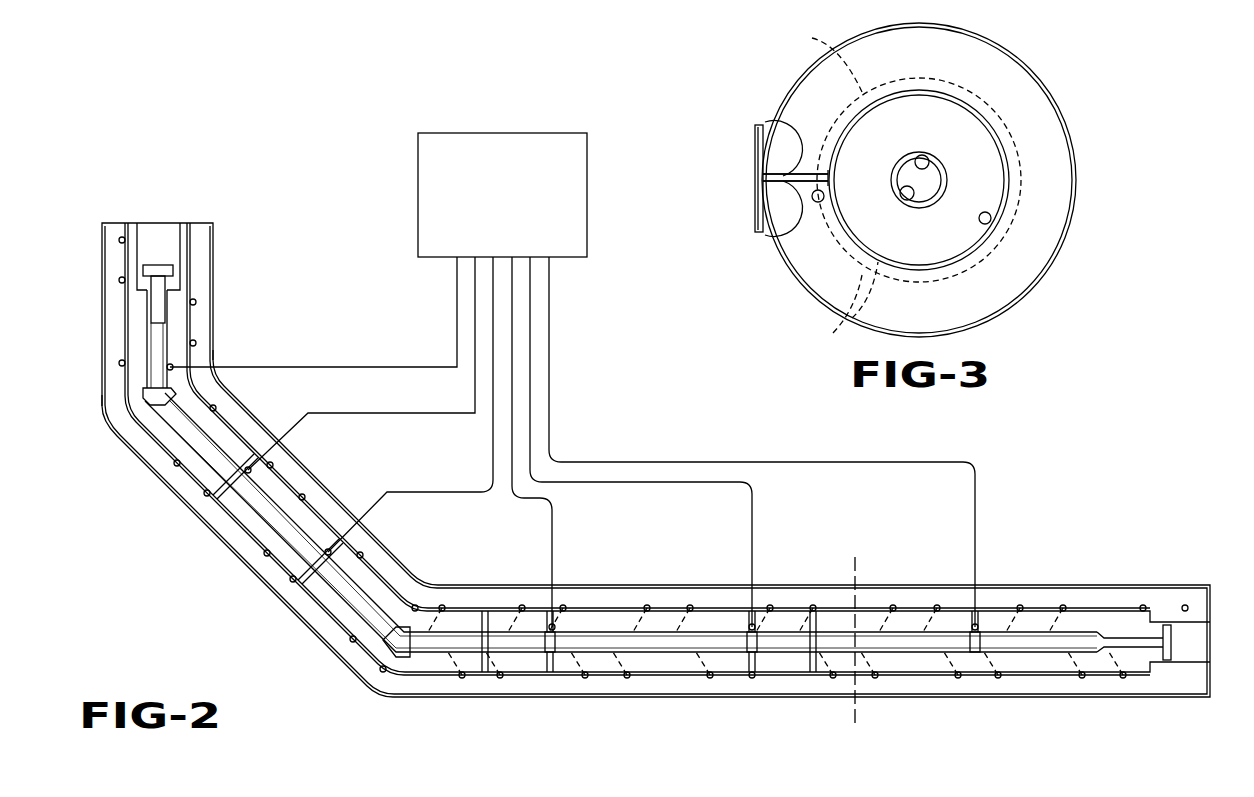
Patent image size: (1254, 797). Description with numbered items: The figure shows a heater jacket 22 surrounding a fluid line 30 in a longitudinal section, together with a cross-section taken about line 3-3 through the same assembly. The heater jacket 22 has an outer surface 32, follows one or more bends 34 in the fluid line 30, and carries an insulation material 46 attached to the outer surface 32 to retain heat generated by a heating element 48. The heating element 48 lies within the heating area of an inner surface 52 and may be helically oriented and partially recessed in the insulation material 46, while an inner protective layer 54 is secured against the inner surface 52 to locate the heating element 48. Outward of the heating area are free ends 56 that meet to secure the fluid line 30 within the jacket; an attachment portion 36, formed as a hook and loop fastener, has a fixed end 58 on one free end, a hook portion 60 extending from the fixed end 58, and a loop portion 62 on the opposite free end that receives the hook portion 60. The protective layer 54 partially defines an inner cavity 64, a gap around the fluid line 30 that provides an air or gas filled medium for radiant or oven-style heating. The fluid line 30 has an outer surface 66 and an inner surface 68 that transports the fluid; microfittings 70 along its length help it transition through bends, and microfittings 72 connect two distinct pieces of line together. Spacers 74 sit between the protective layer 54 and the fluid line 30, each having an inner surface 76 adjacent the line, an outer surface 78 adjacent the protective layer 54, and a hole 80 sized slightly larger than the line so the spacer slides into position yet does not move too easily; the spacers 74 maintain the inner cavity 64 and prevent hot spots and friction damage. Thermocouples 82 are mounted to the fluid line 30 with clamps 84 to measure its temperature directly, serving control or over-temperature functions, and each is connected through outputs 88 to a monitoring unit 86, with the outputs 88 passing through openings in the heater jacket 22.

In FIG. 2, the section line 3- 3 is at (855, 557).
In FIG. 2, the heater jacket 22 is at (632, 500).
In FIG. 3, the heater jacket 22 is at (946, 173).
In FIG. 2, the fluid line 30 is at (1048, 648).
In FIG. 3, the fluid line 30 is at (903, 197).
In FIG. 2, the outer surface 32 is at (102, 297).
In FIG. 3, the outer surface 32 is at (1046, 91).
In FIG. 2, the bend 34 is at (106, 422).
In FIG. 3, the attachment portion 36 is at (755, 140).
In FIG. 2, the insulation material 46 is at (235, 410).
In FIG. 3, the insulation material 46 is at (1040, 143).
In FIG. 2, the heating element 48 is at (140, 352).
In FIG. 3, the heating element 48 is at (812, 38).
In FIG. 3, the inner surface 52 is at (857, 322).
In FIG. 2, the inner protective layer 54 is at (1030, 608).
In FIG. 3, the inner protective layer 54 is at (918, 152).
In FIG. 3, the free ends 56 is at (790, 140).
In FIG. 3, the fixed end 58 is at (762, 196).
In FIG. 3, the hook portion 60 is at (760, 150).
In FIG. 3, the loop portion 62 is at (760, 150).
In FIG. 2, the inner cavity 64 is at (250, 535).
In FIG. 3, the inner cavity 64 is at (980, 232).
In FIG. 3, the outer surface 66 is at (947, 188).
In FIG. 2, the inner surface 68 is at (355, 627).
In FIG. 3, the inner surface 68 is at (852, 185).
In FIG. 2, the microfittings 70 is at (142, 398).
In FIG. 2, the microfittings 72 is at (174, 272).
In FIG. 2, the spacers 74 is at (200, 488).
In FIG. 3, the spacers 74 is at (968, 245).
In FIG. 3, the inner surface 76 is at (948, 100).
In FIG. 3, the outer surface 78 is at (950, 255).
In FIG. 3, the hole 80 is at (948, 100).
In FIG. 2, the thermocouples 82 is at (190, 342).
In FIG. 2, the clamps 84 is at (148, 372).
In FIG. 2, the monitoring unit 86 is at (418, 195).
In FIG. 2, the outputs 88 is at (330, 366).